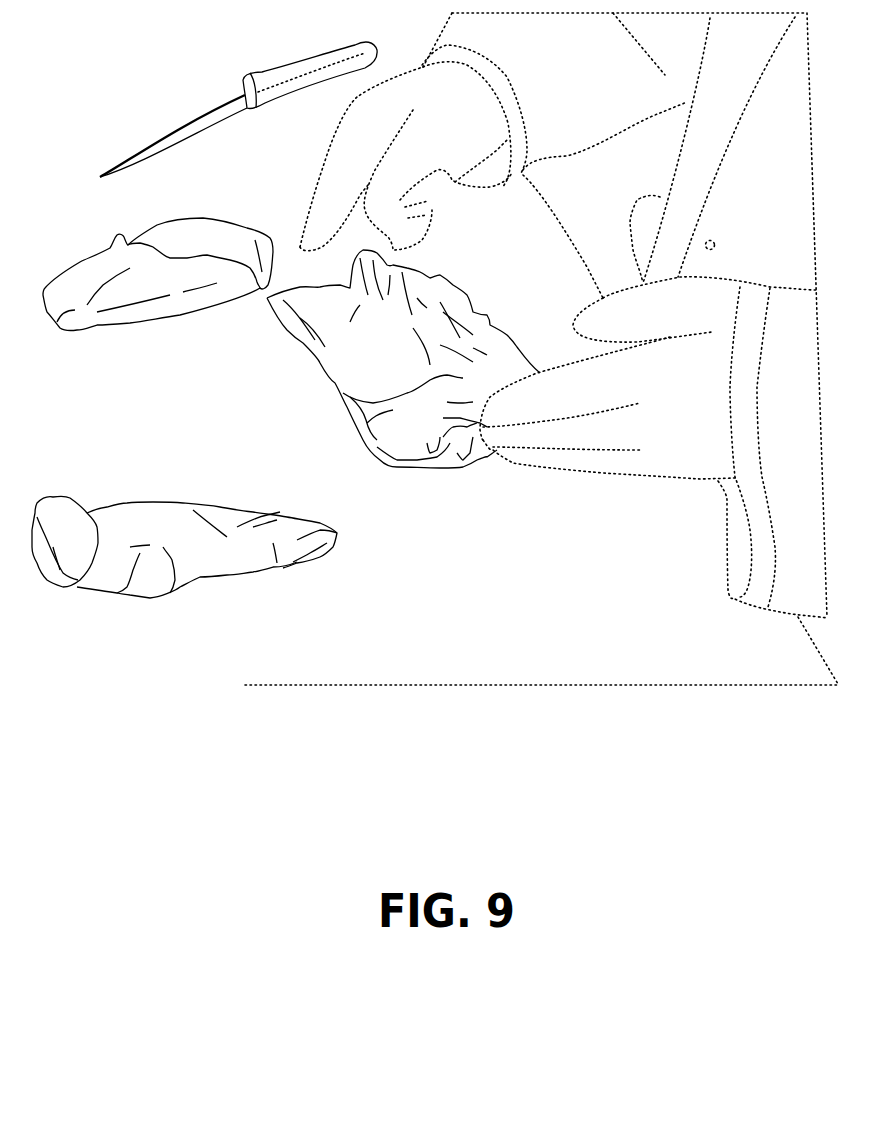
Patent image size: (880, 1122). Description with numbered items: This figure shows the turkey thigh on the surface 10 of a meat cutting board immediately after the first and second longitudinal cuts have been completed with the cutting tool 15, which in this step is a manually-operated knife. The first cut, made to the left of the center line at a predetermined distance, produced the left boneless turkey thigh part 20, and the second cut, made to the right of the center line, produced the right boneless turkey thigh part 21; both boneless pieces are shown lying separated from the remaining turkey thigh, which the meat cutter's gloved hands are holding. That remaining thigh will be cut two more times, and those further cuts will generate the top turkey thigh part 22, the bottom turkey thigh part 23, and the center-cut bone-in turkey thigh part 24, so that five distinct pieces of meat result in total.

The surface 10 is at (694, 688).
The cutting tool 15 is at (183, 118).
The left boneless turkey thigh part 20 is at (198, 580).
The right boneless turkey thigh part 21 is at (83, 327).
The top turkey thigh part 22 is at (357, 359).
The bottom turkey thigh part 23 is at (357, 359).
The center-cut bone-in turkey thigh part 24 is at (315, 371).